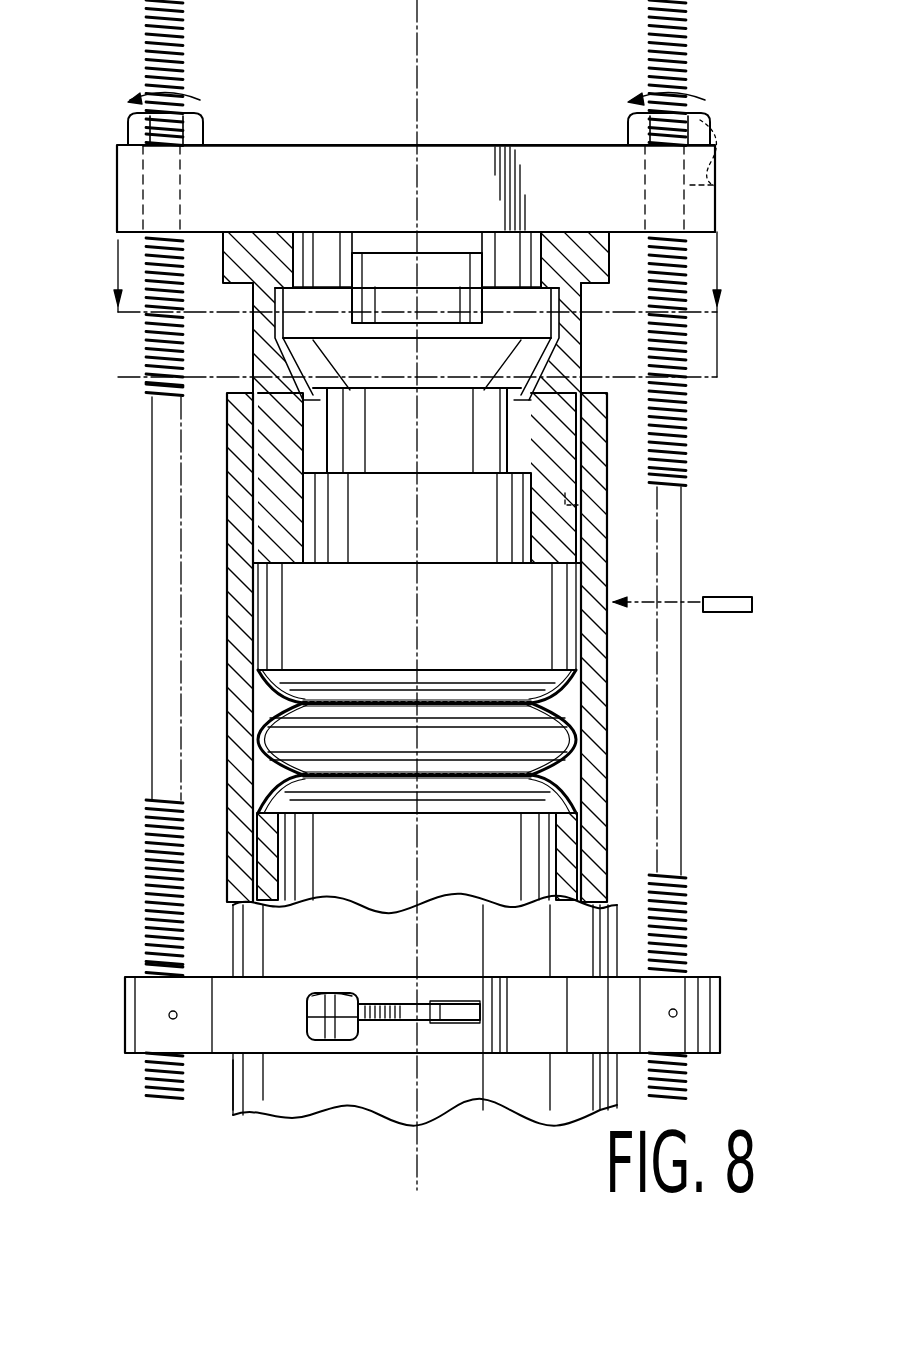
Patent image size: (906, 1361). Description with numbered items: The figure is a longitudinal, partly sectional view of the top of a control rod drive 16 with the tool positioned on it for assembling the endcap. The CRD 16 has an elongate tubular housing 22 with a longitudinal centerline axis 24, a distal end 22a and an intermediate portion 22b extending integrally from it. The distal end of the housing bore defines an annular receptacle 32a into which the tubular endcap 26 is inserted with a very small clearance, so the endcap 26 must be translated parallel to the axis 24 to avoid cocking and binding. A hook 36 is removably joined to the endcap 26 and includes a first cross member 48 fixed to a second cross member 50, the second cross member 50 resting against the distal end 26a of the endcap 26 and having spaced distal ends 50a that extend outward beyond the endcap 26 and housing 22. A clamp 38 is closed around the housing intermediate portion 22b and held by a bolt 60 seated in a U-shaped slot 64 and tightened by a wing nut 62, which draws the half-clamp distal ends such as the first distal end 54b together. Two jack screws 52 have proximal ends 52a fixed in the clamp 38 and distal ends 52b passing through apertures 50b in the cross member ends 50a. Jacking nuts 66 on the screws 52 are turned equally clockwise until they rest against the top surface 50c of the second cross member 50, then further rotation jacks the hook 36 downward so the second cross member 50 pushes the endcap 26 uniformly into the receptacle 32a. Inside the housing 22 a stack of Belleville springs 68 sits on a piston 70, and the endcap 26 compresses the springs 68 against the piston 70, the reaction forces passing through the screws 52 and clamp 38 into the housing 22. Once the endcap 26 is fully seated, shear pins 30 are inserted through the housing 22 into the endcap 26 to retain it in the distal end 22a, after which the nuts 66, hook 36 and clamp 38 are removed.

The control rod drive 16 is at (290, 1085).
The housing 22 is at (232, 920).
The housing distal end 22a is at (222, 612).
The housing intermediate portion 22b is at (235, 952).
The longitudinal centerline axis 24 is at (420, 105).
The endcap 26 is at (222, 265).
The endcap distal end 26a is at (263, 232).
The shear pins 30 is at (716, 576).
The annular receptacle 32a is at (280, 645).
The hook 36 is at (513, 143).
The clamp 38 is at (535, 1058).
The first cross member 48 is at (392, 275).
The second cross member 50 is at (350, 143).
The second cross member distal ends 50a is at (117, 218).
The apertures 50b is at (715, 140).
The top surface 50c is at (265, 145).
The jack screws 52 is at (160, 762).
The jack screw proximal end 52a is at (150, 1060).
The jack screw distal end 52b is at (640, 98).
The first distal end 54b is at (445, 977).
The bolt 60 is at (455, 1050).
The wing nut 62 is at (340, 1050).
The U-shaped slot 64 is at (410, 1040).
The jacking nuts 66 is at (130, 128).
The Belleville springs 68 is at (600, 745).
The piston 70 is at (607, 808).